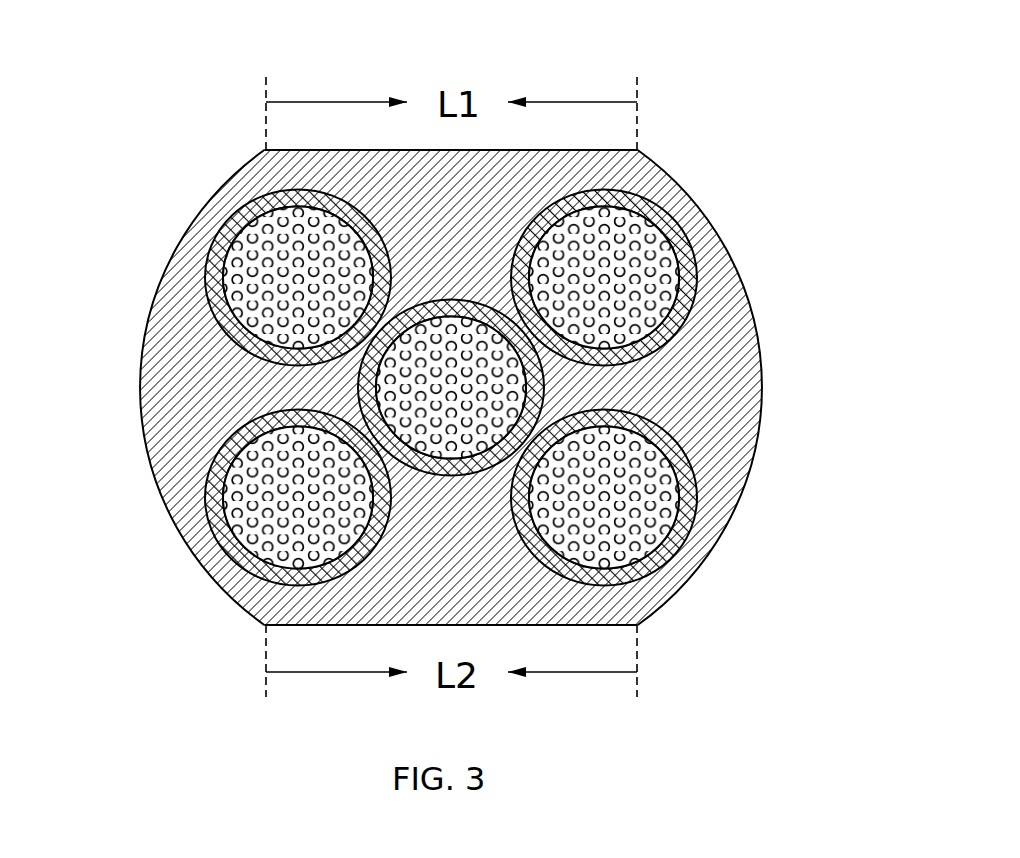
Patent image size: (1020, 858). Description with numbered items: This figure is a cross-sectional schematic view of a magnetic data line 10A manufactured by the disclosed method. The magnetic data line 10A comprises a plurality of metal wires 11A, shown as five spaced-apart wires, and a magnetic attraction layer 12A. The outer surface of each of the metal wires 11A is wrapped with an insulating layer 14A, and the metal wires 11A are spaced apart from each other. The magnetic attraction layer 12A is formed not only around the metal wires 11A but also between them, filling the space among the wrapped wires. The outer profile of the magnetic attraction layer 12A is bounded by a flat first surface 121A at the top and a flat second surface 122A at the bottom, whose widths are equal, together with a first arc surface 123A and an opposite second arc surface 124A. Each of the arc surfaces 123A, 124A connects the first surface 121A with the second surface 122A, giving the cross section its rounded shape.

The magnetic data line 10A is at (104, 51).
The metal wires 11A is at (238, 263).
The magnetic attraction layer 12A is at (205, 407).
The insulating layer 14A is at (237, 330).
The first surface 121A is at (578, 149).
The second surface 122A is at (605, 625).
The first arc surface 123A is at (737, 503).
The second arc surface 124A is at (180, 532).